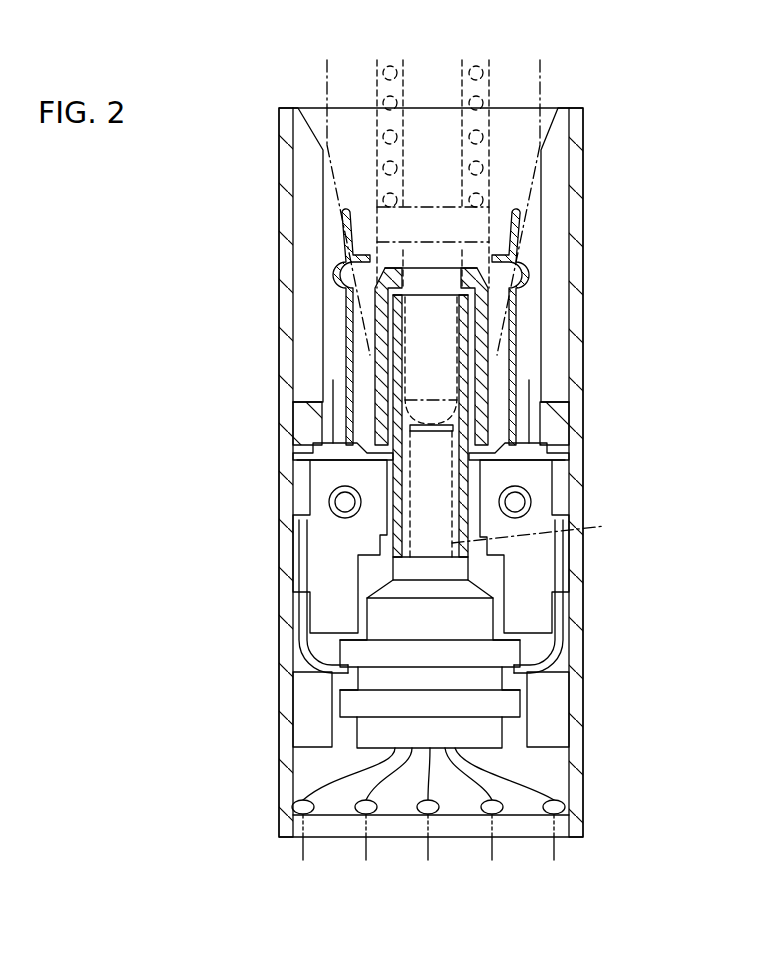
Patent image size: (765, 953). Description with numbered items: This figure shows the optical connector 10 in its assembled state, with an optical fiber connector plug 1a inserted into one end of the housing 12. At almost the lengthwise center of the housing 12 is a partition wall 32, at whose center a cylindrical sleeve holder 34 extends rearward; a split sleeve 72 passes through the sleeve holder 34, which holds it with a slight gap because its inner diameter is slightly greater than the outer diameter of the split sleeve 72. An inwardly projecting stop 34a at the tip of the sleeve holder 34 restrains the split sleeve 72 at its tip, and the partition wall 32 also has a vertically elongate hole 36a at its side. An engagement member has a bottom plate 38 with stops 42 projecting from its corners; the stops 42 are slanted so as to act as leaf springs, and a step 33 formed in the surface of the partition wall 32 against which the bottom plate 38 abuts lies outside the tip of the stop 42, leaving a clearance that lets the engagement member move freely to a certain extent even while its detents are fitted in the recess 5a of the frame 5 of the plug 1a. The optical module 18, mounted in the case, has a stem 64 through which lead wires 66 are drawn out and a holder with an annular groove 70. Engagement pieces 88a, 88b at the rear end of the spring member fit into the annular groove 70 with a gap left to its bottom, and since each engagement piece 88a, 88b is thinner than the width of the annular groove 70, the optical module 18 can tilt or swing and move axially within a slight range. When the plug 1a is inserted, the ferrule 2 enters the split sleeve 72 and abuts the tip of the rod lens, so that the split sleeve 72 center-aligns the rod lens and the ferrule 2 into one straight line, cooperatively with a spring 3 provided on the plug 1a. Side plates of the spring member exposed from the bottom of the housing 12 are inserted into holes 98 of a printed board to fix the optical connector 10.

The optical connector 10 is at (262, 222).
The housing 12 is at (281, 322).
The partition wall 32 is at (547, 418).
The spring 3 is at (477, 72).
The optical fiber connector plug 1a is at (541, 92).
The frame 5 is at (543, 293).
The recess 5a is at (473, 257).
The vertically elongate hole 36a is at (521, 260).
The sleeve holder 34 is at (486, 372).
The stop 34a is at (478, 281).
The split sleeve 72 is at (467, 345).
The ferrule 2 is at (445, 383).
The optical module 18 is at (378, 568).
The bottom plate 38 is at (480, 460).
The step 33 is at (313, 456).
The stop 42 is at (550, 468).
The hole 98 is at (543, 528).
The engagement piece 88b is at (310, 655).
The engagement piece 88a is at (530, 662).
The annular groove 70 is at (350, 678).
The stem 64 is at (490, 738).
The lead wires 66 is at (520, 782).